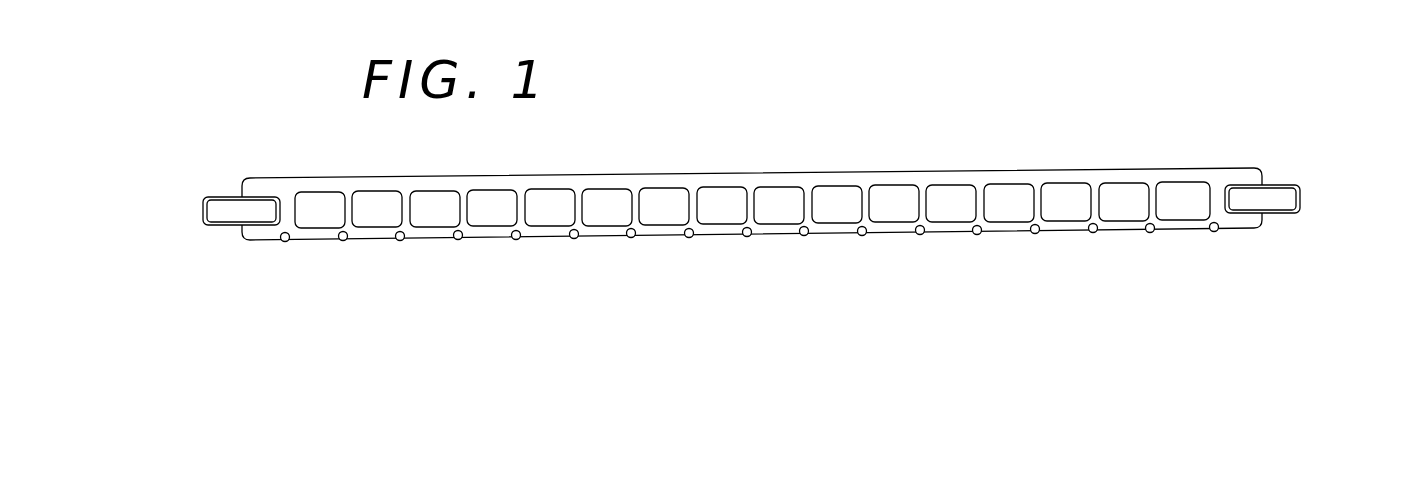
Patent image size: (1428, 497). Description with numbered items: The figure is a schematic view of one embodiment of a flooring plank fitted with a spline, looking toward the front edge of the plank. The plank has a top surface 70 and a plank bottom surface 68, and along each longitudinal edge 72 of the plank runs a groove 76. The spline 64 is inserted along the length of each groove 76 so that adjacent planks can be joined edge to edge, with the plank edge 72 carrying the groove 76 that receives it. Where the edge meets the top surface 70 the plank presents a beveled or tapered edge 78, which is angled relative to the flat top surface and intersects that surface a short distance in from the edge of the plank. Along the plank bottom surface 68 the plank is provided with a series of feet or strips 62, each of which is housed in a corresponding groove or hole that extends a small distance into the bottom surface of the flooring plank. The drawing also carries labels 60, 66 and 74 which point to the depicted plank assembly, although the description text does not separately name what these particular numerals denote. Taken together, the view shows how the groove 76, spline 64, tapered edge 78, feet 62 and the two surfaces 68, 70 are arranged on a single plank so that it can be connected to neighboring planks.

The window opening 60 is at (1172, 198).
The foot 62 is at (1093, 233).
The spline 64 is at (1300, 213).
The window opening 66 is at (980, 200).
The plank bottom surface 68 is at (680, 253).
The top surface 70 is at (870, 155).
The longitudinal edge 72 is at (755, 223).
The frame 74 is at (755, 221).
The groove 76 is at (1235, 212).
The beveled or tapered edge 78 is at (1262, 168).